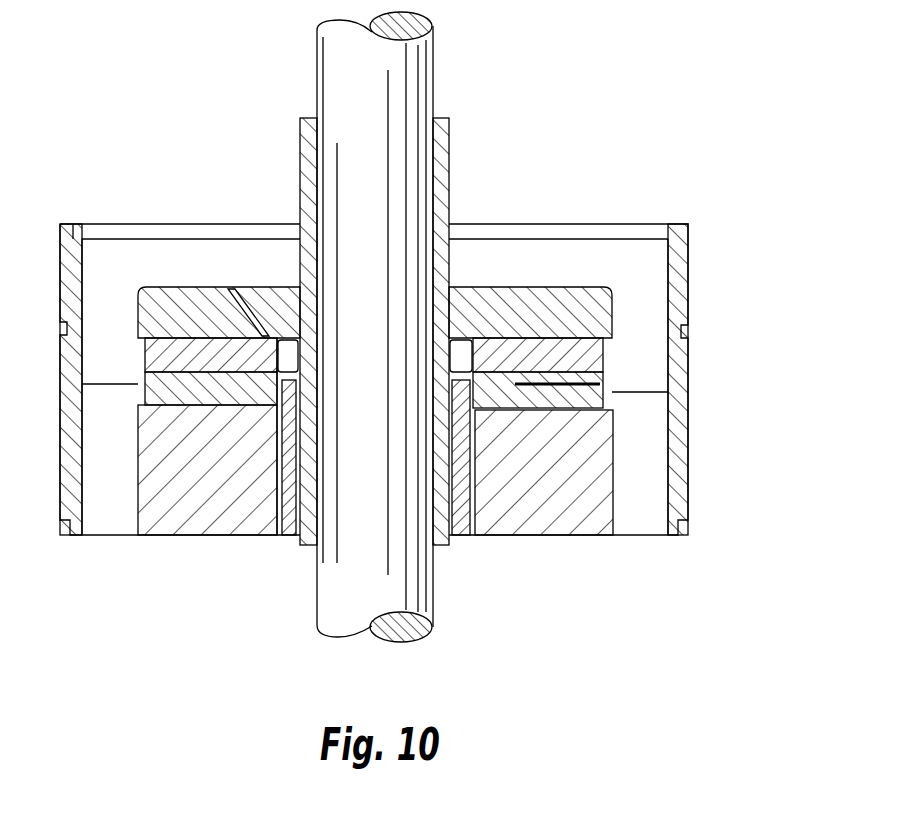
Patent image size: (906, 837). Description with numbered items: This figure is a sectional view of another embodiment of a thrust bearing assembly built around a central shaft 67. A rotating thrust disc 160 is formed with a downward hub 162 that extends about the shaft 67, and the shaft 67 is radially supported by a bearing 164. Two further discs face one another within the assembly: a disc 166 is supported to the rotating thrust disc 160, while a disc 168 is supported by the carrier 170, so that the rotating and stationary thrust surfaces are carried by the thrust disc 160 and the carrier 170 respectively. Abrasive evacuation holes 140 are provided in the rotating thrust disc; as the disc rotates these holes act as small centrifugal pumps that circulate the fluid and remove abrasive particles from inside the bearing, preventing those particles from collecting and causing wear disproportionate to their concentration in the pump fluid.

The shaft 67 is at (410, 68).
The abrasive evacuation holes 140 is at (243, 288).
The rotating thrust disc 160 is at (534, 290).
The downward hub 162 is at (300, 545).
The bearing 164 is at (458, 540).
The disc 166 is at (578, 357).
The disc 168 is at (590, 398).
The carrier 170 is at (583, 520).